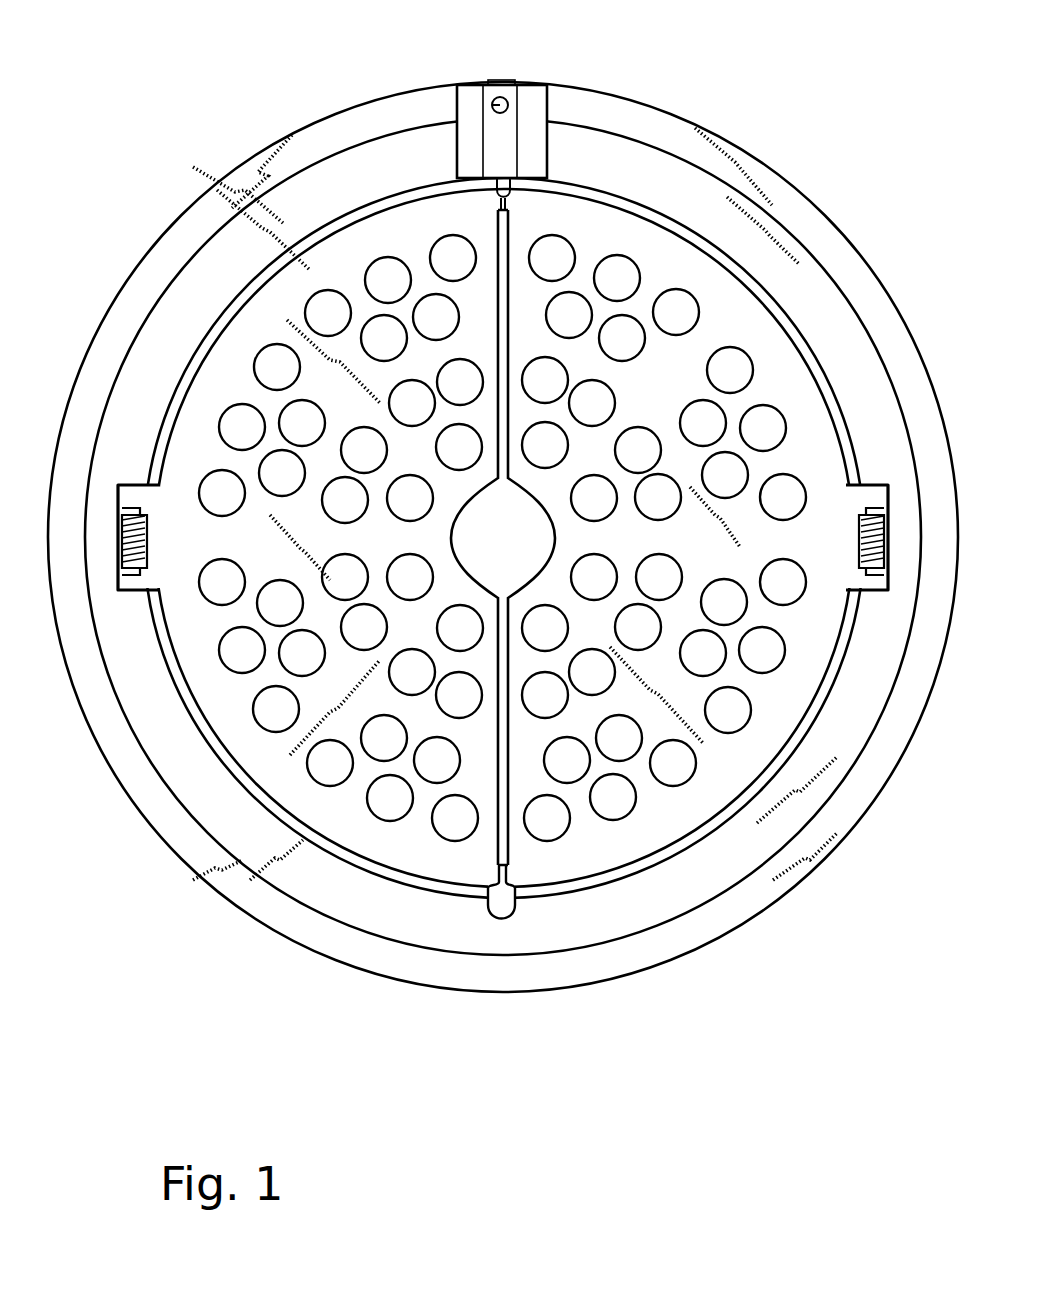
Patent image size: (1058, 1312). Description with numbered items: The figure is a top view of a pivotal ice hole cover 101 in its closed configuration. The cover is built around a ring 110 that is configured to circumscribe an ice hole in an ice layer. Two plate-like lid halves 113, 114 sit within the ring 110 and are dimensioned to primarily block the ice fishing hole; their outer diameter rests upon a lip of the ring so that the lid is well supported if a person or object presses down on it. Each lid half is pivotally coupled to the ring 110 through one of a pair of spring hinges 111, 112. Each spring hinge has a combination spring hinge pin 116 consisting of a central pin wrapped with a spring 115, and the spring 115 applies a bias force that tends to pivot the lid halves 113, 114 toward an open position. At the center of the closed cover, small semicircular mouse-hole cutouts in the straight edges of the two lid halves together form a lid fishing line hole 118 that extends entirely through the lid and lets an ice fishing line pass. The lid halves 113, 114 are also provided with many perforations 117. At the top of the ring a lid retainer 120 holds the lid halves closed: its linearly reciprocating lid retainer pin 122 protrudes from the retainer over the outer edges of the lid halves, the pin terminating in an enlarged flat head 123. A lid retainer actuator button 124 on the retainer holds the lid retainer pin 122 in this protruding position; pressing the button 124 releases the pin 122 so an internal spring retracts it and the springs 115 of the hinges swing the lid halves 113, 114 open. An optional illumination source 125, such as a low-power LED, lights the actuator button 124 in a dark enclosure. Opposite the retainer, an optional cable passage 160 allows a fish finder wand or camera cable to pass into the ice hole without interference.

The pivotal ice hole cover 101 is at (163, 77).
The ring 110 is at (850, 239).
The spring hinge 111 is at (899, 500).
The spring hinge 112 is at (105, 500).
The lid half 113 is at (556, 864).
The lid half 114 is at (254, 333).
The spring 115 is at (118, 592).
The spring hinge pin 116 is at (118, 552).
The perforations 117 is at (680, 767).
The lid fishing line hole 118 is at (522, 514).
The lid retainer 120 is at (521, 72).
The lid retainer pin 122 is at (514, 187).
The enlarged flat head 123 is at (496, 79).
The lid retainer actuator button 124 is at (512, 104).
The illumination source 125 is at (493, 103).
The cable passage 160 is at (501, 896).